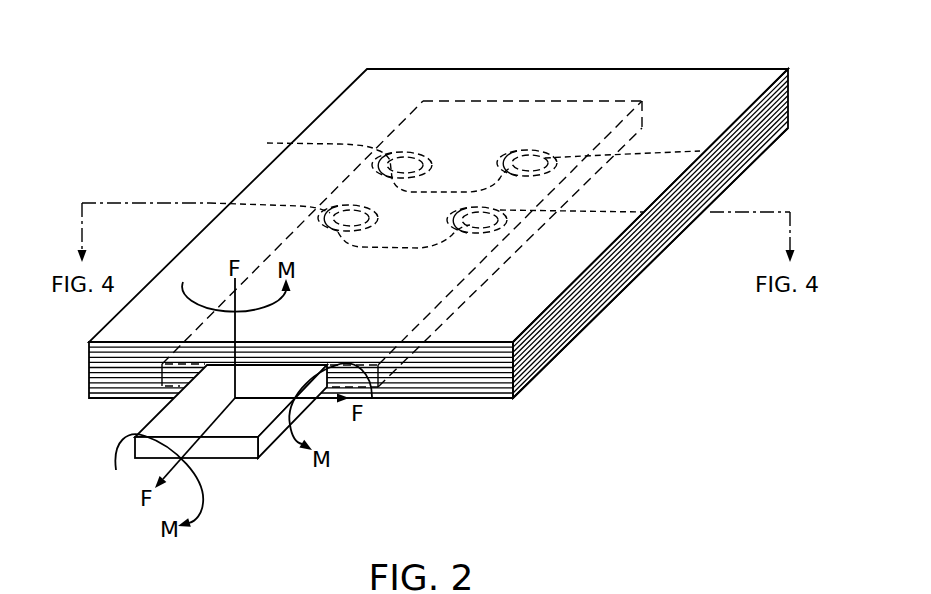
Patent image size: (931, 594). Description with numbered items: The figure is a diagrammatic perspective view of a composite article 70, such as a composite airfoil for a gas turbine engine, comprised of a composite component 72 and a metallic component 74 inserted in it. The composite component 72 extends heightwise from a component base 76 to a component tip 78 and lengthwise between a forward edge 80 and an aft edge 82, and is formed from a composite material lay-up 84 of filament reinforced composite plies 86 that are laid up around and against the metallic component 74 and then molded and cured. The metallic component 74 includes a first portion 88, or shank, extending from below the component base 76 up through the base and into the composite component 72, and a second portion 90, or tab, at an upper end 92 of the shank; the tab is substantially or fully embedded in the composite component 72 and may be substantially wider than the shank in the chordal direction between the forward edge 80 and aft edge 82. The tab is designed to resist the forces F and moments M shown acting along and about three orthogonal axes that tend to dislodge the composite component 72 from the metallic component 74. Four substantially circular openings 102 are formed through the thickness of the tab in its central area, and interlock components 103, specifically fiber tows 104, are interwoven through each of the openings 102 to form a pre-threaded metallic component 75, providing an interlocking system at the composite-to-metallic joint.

The composite article 70 is at (192, 67).
The composite component 72 is at (781, 129).
The metallic component 74 is at (297, 415).
The pre-threaded metallic component 75 is at (147, 458).
The component base 76 is at (487, 384).
The component tip 78 is at (762, 68).
The forward edge 80 is at (263, 160).
The aft edge 82 is at (641, 258).
The composite material lay-up 84 is at (123, 390).
The filament reinforced composite plies 86 is at (549, 368).
The first portion 88 is at (233, 458).
The second portion 90 is at (528, 112).
The upper end 92 is at (615, 112).
The openings 102 is at (400, 148).
The interlock components 103 is at (678, 231).
The fiber tows 104 is at (327, 135).